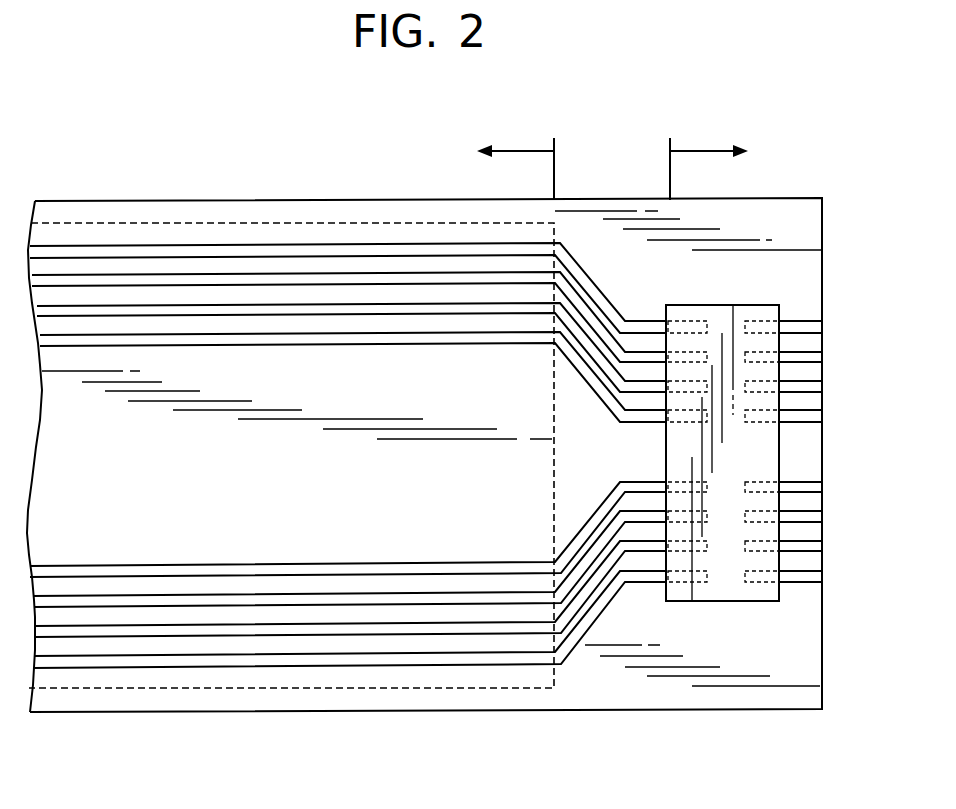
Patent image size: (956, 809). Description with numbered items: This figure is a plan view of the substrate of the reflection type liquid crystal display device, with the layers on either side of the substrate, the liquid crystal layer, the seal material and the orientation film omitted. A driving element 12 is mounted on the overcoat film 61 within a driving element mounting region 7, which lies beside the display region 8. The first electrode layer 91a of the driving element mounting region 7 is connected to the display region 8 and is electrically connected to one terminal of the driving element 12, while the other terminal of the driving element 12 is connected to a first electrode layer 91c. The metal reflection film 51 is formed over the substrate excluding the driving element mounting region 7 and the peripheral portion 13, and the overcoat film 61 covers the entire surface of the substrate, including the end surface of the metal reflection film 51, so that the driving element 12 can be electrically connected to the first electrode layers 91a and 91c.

The driving element mounting region 7 is at (699, 150).
The display region 8 is at (523, 150).
The driving element 12 is at (733, 290).
The peripheral portion 13 is at (280, 700).
The metal reflection film 51 is at (145, 690).
The overcoat film 61 is at (798, 672).
The first electrode layer 91a is at (592, 290).
The first electrode layer 91c is at (815, 415).